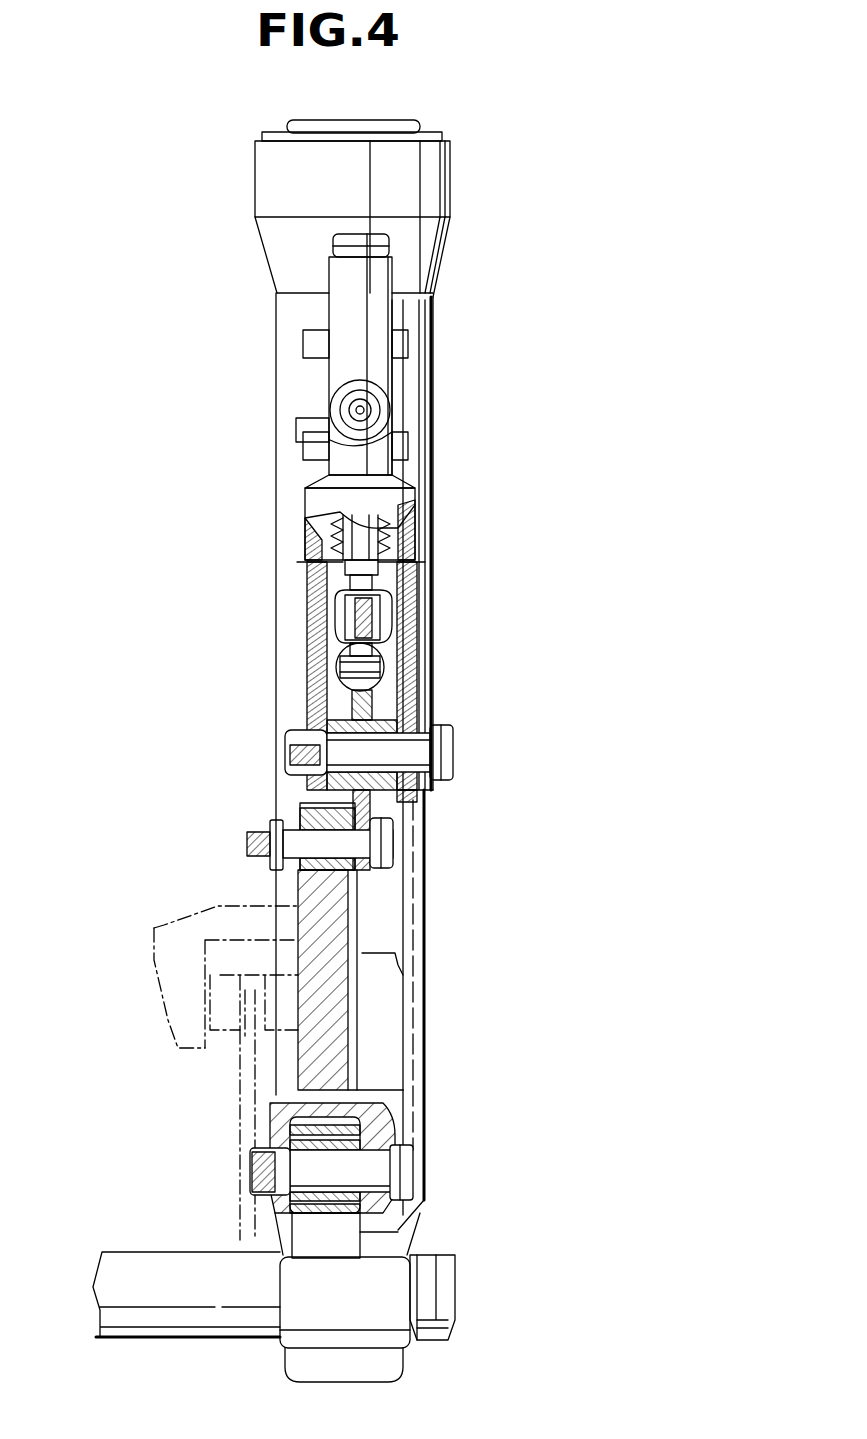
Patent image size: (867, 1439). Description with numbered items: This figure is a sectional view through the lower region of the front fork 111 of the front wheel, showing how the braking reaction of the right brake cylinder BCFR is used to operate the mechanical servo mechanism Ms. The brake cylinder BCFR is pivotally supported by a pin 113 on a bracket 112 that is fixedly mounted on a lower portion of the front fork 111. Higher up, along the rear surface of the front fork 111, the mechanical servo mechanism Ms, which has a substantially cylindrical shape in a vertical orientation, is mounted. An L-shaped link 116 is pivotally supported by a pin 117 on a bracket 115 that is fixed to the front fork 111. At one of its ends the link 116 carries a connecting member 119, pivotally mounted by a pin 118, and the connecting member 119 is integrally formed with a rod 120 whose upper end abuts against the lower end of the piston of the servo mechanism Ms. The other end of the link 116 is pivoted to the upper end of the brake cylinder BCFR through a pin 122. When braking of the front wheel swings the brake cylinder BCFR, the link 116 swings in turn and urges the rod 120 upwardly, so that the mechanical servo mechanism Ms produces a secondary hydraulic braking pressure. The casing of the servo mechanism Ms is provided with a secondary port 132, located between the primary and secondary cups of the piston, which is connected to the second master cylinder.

The front fork 111 is at (277, 400).
The bracket 112 is at (343, 1238).
The pin 113 is at (378, 1168).
The bracket 115 is at (370, 705).
The L-shaped link 116 is at (371, 803).
The pin 117 is at (455, 750).
The pin 118 is at (378, 672).
The connecting member 119 is at (392, 620).
The rod 120 is at (372, 532).
The pin 122 is at (388, 858).
The secondary port 132 is at (365, 411).
The mechanical servo mechanism Ms is at (305, 373).
The right brake cylinder BCFR is at (165, 925).